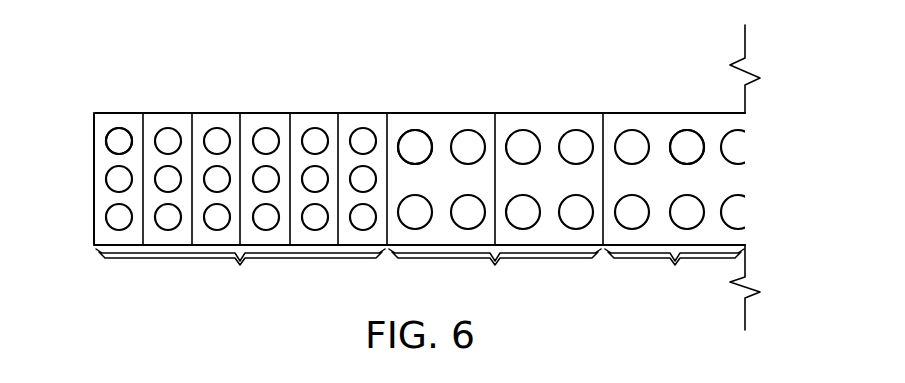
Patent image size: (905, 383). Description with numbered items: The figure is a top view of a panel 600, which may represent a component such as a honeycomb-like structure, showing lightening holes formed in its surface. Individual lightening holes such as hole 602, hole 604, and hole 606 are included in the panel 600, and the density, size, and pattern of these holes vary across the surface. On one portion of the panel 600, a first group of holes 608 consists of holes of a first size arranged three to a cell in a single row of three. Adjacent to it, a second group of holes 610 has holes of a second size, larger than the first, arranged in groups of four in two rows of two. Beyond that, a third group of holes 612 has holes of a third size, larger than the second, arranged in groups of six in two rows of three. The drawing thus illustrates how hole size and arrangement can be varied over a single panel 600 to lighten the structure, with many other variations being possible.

The panel 600 is at (424, 168).
The hole 602 is at (127, 144).
The hole 604 is at (428, 150).
The hole 606 is at (700, 150).
The first group of holes 608 is at (241, 205).
The second group of holes 610 is at (496, 205).
The third group of holes 612 is at (680, 213).